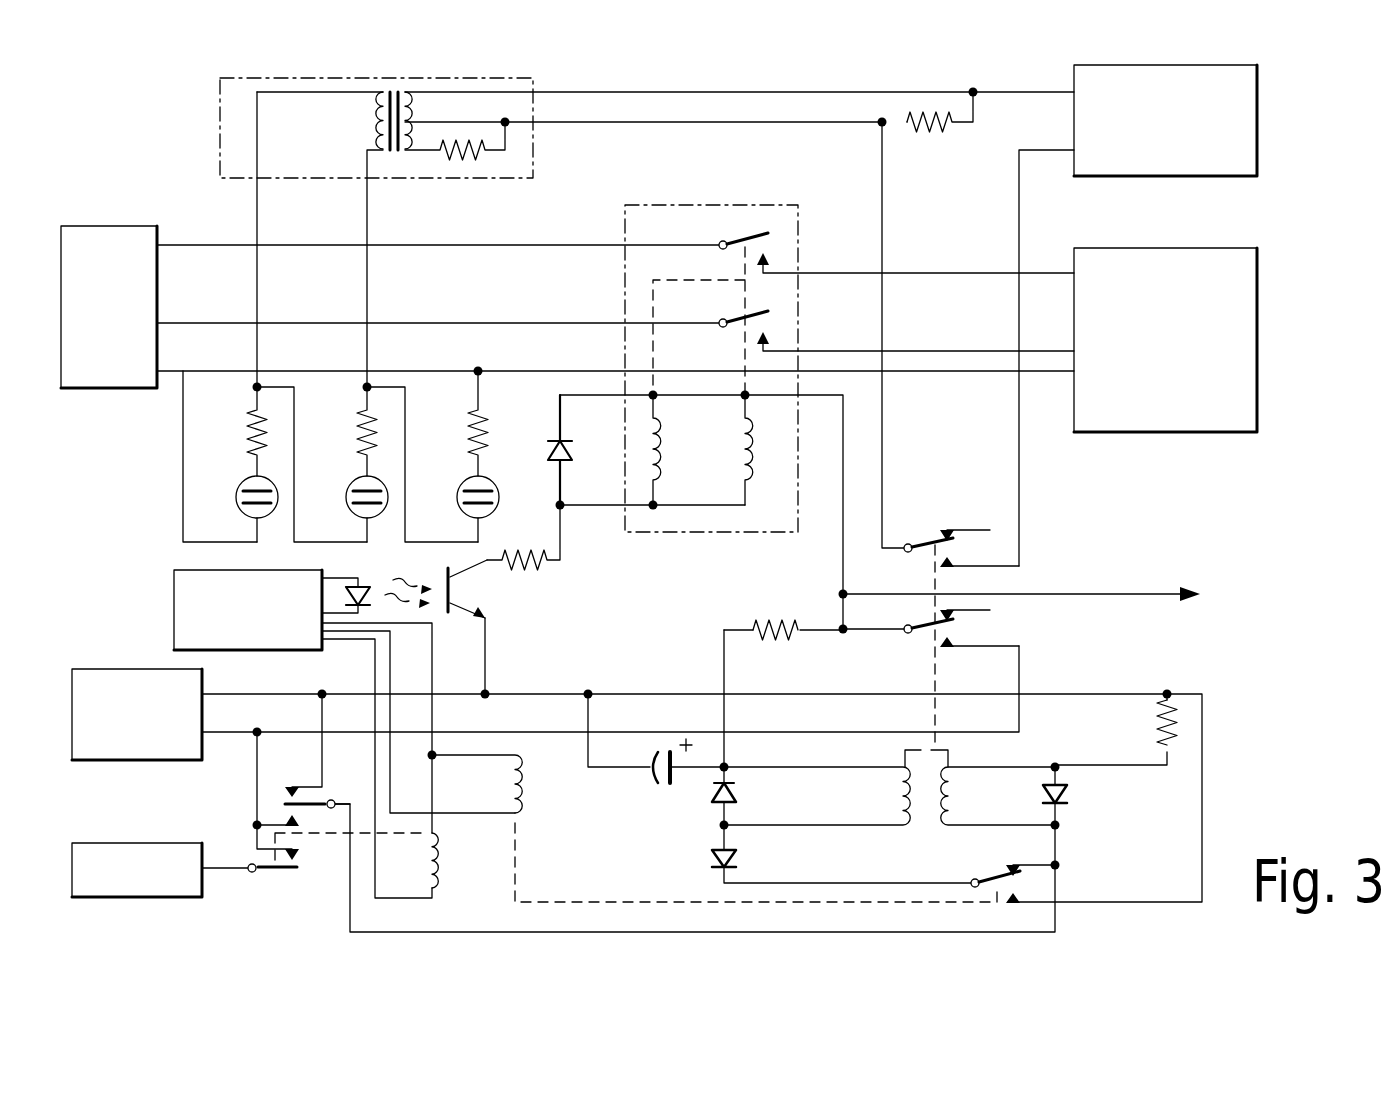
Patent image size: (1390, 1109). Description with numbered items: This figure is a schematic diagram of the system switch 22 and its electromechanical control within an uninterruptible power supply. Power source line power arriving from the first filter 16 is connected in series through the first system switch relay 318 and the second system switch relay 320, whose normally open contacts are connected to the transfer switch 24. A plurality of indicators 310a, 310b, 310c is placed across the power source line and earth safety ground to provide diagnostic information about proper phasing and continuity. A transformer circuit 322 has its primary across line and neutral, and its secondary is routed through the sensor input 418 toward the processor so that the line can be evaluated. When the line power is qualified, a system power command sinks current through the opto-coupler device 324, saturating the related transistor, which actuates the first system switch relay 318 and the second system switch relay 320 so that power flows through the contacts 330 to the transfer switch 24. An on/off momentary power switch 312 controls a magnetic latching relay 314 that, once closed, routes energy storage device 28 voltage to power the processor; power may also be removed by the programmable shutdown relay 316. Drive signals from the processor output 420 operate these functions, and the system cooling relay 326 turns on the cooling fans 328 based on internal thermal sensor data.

The first filter 16 is at (100, 226).
The system switch 22 is at (668, 205).
The transfer switch 24 is at (1207, 433).
The energy storage device 28 is at (137, 669).
The indicator 310a is at (236, 496).
The indicator 310b is at (346, 496).
The indicator 310c is at (457, 496).
The on/off momentary power switch 312 is at (328, 793).
The magnetic latching relay 314 is at (925, 826).
The programmable shutdown relay 316 is at (1020, 891).
The first system switch relay 318 is at (668, 455).
The second system switch relay 320 is at (760, 475).
The transformer circuit 322 is at (220, 130).
The opto-coupler device 324 is at (402, 578).
The system cooling relay 326 is at (297, 862).
The cooling fans 328 is at (137, 843).
The switch contacts 330 is at (1130, 594).
The sensor input 418 is at (1228, 177).
The processor output 420 is at (173, 597).